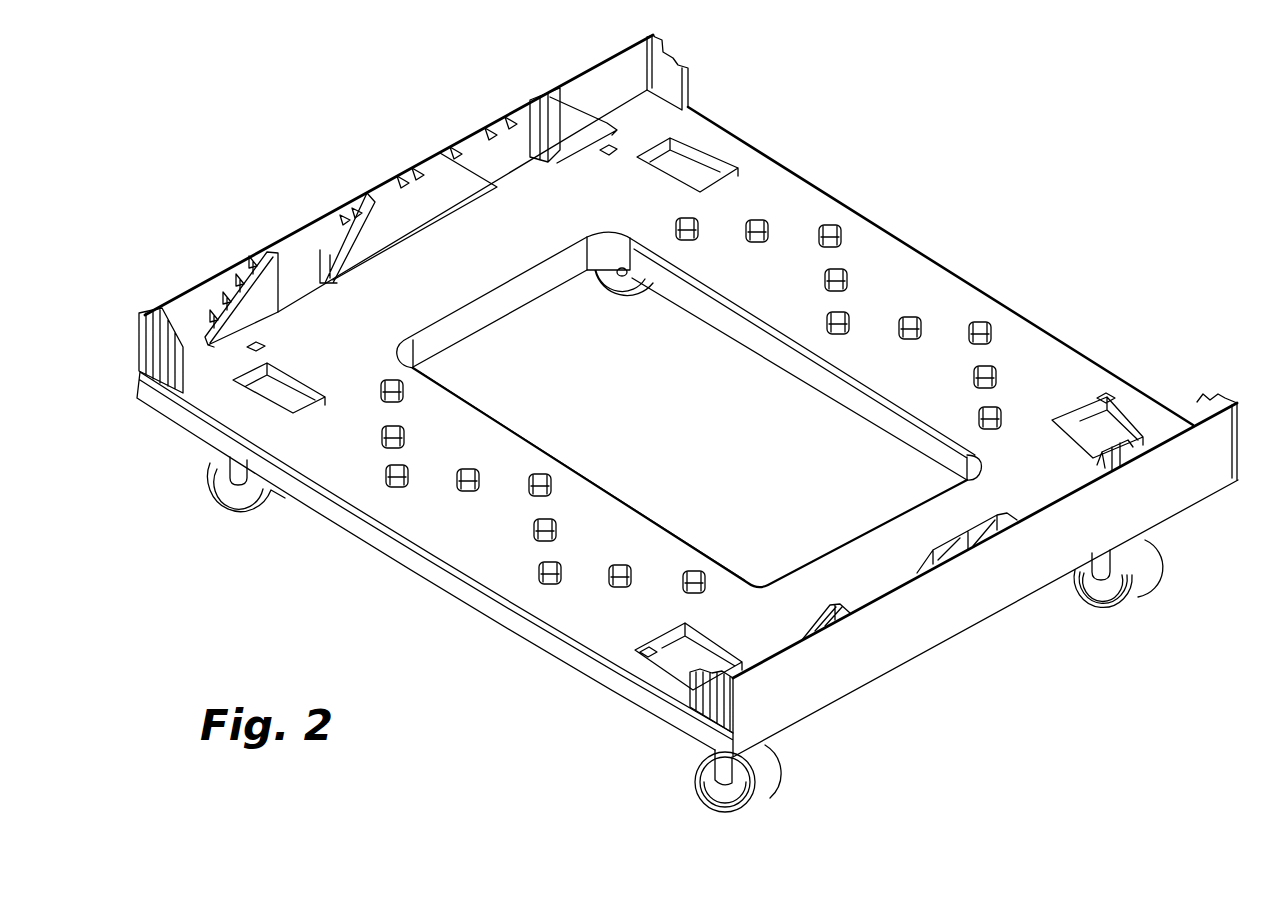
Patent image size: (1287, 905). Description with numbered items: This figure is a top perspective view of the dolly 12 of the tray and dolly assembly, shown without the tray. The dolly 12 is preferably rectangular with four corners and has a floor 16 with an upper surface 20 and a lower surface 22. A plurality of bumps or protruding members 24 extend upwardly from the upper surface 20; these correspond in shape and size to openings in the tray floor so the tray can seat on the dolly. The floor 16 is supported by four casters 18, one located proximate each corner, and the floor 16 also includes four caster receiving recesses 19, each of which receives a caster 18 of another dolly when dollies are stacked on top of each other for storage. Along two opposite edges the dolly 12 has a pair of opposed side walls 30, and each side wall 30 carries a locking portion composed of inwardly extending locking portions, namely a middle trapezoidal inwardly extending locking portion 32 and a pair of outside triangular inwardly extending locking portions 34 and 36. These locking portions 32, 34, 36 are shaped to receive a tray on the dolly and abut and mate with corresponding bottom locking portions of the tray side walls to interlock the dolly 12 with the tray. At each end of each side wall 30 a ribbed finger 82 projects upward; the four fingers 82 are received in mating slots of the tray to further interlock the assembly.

The dolly 12 is at (478, 617).
The floor 16 is at (579, 478).
The caster 18 is at (223, 493).
The caster receiving recess 19 is at (693, 152).
The upper surface 20 is at (741, 305).
The lower surface 22 is at (793, 374).
The protruding member 24 is at (848, 238).
The side wall 30 is at (605, 61).
The middle trapezoidal inwardly extending locking portion 32 is at (355, 233).
The outside triangular inwardly extending locking portion 34 is at (252, 273).
The outside triangular inwardly extending locking portion 36 is at (562, 88).
The ribbed finger 82 is at (680, 58).